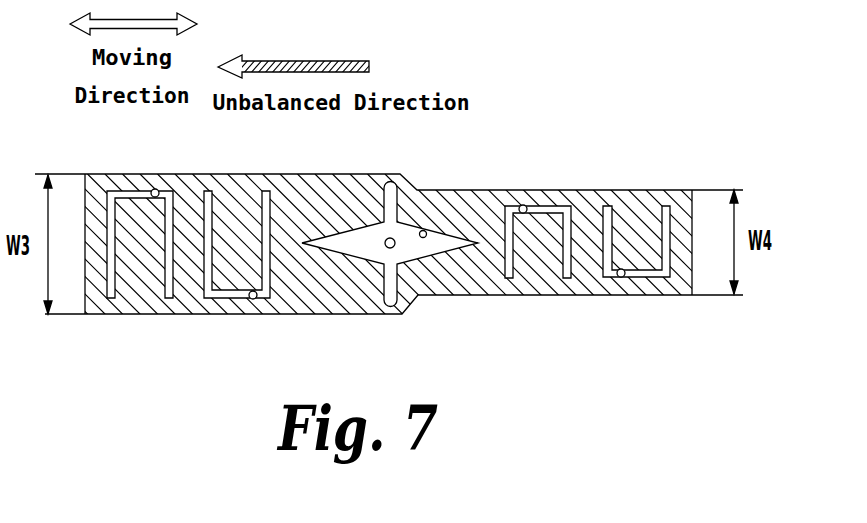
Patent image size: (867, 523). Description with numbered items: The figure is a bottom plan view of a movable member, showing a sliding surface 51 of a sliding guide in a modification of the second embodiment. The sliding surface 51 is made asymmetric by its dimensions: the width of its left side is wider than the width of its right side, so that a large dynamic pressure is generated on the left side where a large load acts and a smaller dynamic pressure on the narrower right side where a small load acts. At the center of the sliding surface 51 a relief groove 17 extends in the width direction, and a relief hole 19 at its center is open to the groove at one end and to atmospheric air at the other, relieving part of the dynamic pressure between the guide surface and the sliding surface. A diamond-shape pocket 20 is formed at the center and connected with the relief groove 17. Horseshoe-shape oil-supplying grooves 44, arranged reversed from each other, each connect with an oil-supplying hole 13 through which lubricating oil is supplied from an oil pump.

The sliding surface 51 is at (162, 315).
The horseshoe-shape oil-supplying groove 44 is at (123, 194).
The oil-supplying hole 13 is at (156, 189).
The relief groove 17 is at (390, 290).
The relief hole 19 is at (388, 238).
The diamond-shape pocket 20 is at (423, 230).